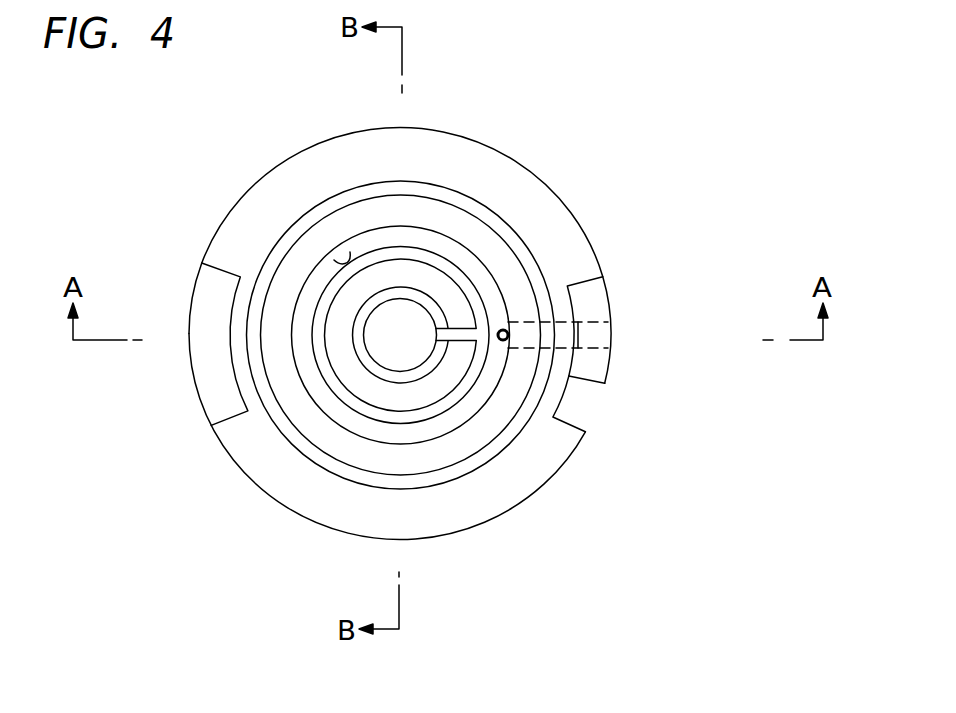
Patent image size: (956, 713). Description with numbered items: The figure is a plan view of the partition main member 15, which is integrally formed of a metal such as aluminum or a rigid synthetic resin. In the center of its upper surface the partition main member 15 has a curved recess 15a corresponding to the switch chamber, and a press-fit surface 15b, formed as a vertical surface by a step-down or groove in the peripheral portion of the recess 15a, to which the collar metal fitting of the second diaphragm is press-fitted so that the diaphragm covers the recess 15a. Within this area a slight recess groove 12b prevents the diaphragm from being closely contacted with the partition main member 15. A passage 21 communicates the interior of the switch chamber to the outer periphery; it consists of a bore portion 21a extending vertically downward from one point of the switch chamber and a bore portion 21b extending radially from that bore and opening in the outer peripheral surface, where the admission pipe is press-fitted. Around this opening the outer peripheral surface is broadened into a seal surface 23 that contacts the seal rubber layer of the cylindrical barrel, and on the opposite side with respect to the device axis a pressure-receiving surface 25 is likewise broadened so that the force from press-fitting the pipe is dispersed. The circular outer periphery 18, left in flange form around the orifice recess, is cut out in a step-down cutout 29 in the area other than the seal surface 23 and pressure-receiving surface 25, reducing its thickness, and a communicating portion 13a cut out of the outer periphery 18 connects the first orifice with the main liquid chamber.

The partition main member 15 is at (524, 148).
The recess 15a is at (350, 252).
The press-fit surface 15b is at (266, 256).
The cutout 29 is at (528, 205).
The passage 21 is at (686, 228).
The bore portion 21a is at (508, 331).
The bore portion 21b is at (603, 320).
The seal surface 23 is at (612, 363).
The communicating portion 13a is at (584, 388).
The outer periphery 18 is at (505, 516).
The recess groove 12b is at (393, 379).
The pressure-receiving surface 25 is at (190, 352).